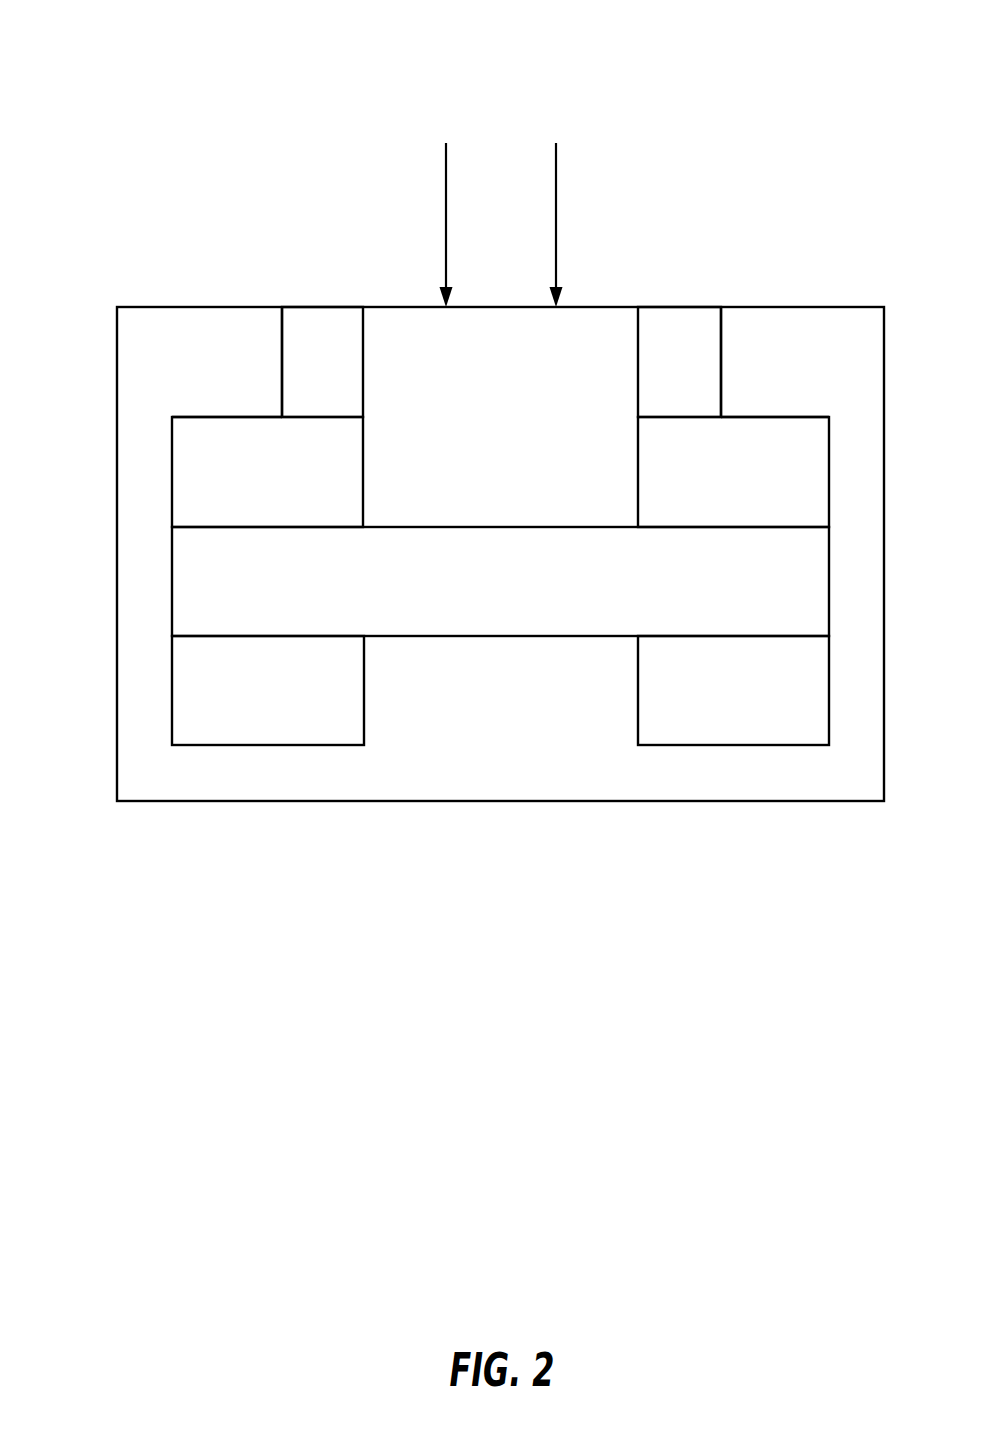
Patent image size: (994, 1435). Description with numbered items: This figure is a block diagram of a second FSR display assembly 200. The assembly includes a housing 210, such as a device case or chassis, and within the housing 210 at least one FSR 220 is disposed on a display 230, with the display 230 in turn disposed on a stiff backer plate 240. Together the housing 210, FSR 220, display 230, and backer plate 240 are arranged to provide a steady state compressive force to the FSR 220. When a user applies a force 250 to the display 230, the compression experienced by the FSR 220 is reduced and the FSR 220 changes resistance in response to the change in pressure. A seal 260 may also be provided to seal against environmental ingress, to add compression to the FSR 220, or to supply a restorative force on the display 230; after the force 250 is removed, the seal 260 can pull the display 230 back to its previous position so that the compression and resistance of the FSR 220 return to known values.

The second FSR display assembly 200 is at (868, 49).
The housing 210 is at (172, 307).
The FSR 220 is at (172, 472).
The display 230 is at (172, 588).
The backer plate 240 is at (172, 690).
The force 250 is at (501, 225).
The seal 260 is at (693, 308).